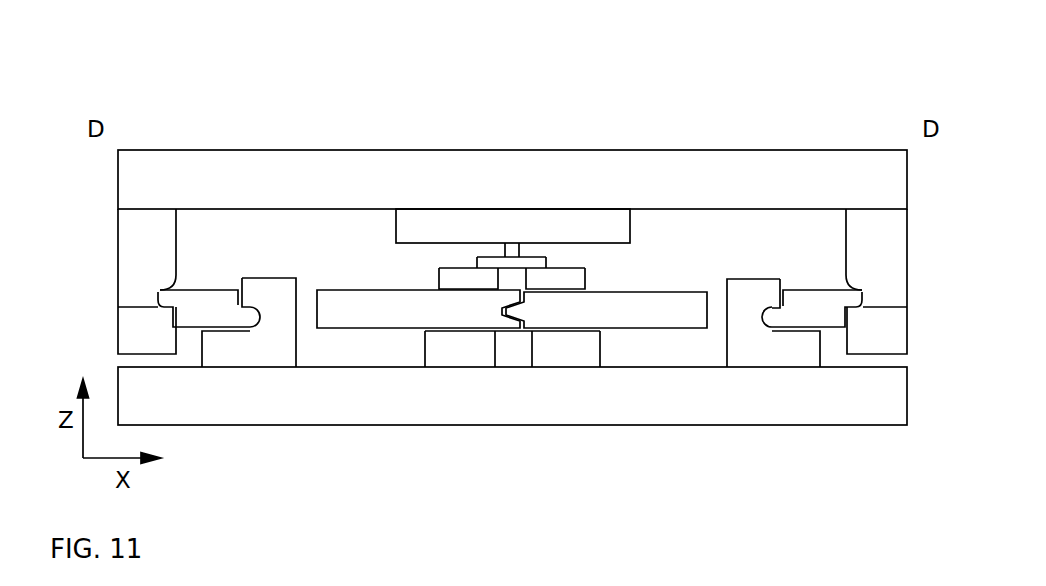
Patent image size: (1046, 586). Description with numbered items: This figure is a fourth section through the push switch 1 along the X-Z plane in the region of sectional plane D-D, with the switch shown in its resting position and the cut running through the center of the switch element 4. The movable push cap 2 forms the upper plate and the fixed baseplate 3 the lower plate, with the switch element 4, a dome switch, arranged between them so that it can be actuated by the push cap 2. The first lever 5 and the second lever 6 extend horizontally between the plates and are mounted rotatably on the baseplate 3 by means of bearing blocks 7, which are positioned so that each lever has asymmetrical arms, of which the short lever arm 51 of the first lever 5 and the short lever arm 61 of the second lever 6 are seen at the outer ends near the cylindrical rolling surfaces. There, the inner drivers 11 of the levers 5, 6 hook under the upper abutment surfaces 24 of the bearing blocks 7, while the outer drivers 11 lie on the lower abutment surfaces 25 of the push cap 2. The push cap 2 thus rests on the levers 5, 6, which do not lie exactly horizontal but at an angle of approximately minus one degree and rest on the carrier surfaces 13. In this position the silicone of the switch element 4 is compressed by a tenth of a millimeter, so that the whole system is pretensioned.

The push switch 1 is at (413, 120).
The push cap 2 is at (616, 151).
The baseplate 3 is at (739, 425).
The switch element 4 is at (513, 243).
The first lever 5 is at (395, 289).
The second lever 6 is at (632, 289).
The bearing block 7 is at (295, 338).
The driver 11 is at (167, 297).
The carrier surface 13 is at (567, 330).
The upper abutment surface 24 is at (250, 306).
The lower abutment surface 25 is at (168, 309).
The lever arm 51 is at (208, 304).
The lever arm 61 is at (812, 307).